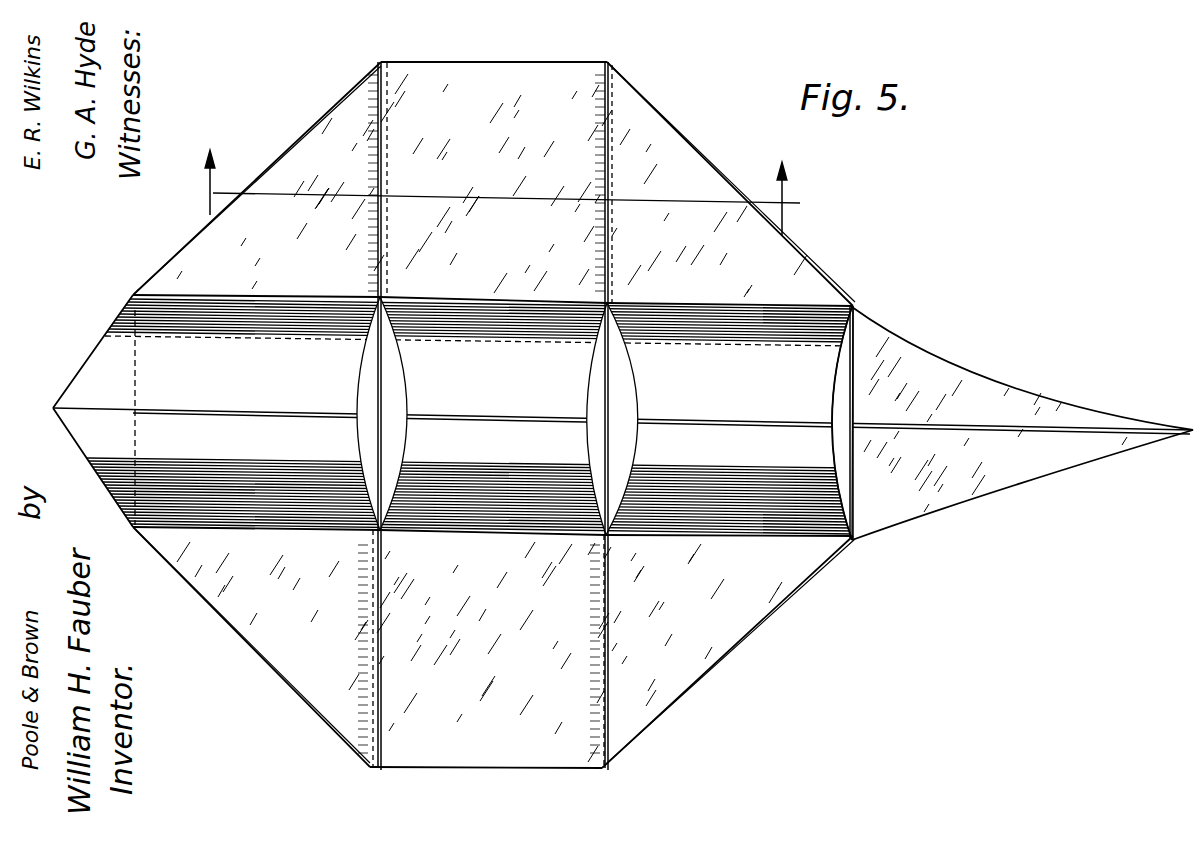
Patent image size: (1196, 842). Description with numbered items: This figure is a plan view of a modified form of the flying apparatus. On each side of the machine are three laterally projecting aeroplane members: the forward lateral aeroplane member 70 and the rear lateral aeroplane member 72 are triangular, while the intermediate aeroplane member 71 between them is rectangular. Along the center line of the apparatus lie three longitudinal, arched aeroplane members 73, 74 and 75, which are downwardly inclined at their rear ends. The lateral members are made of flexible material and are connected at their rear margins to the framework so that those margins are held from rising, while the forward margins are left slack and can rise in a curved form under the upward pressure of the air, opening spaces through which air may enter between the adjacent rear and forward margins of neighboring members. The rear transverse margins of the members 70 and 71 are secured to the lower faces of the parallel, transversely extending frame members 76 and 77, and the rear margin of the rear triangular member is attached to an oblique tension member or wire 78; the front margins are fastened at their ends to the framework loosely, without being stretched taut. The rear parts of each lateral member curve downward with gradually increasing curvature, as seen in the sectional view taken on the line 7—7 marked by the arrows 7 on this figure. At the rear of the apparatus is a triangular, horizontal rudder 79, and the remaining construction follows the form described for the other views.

The forward lateral aeroplane member 70 is at (333, 143).
The intermediate lateral aeroplane member 71 is at (491, 80).
The rear lateral aeroplane member 72 is at (700, 180).
The forward longitudinal arched aeroplane member 73 is at (110, 360).
The intermediate longitudinal arched aeroplane member 74 is at (428, 390).
The rear longitudinal arched aeroplane member 75 is at (820, 360).
The transversely extending frame member 76 is at (382, 63).
The transversely extending frame member 77 is at (618, 58).
The oblique tension member or wire 78 is at (177, 247).
The triangular horizontal rudder 79 is at (1063, 447).
The section line 7- 7 is at (493, 192).